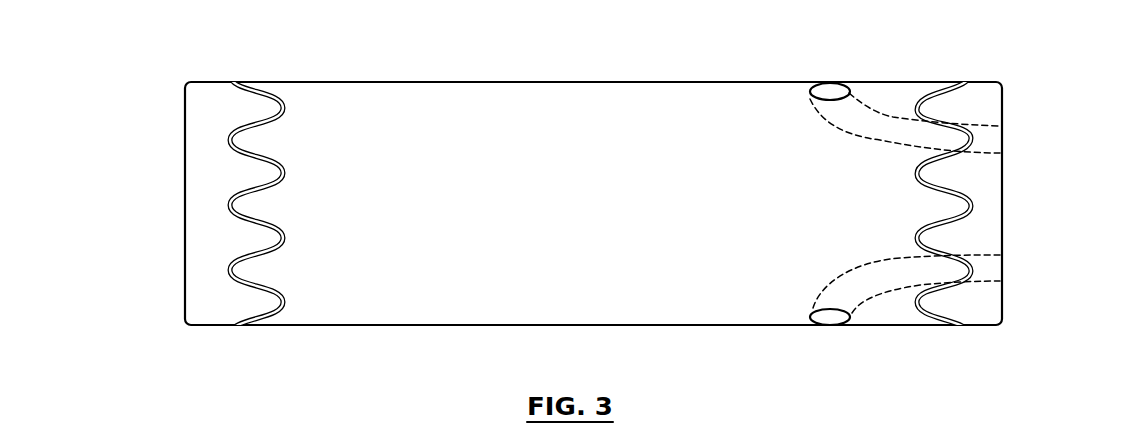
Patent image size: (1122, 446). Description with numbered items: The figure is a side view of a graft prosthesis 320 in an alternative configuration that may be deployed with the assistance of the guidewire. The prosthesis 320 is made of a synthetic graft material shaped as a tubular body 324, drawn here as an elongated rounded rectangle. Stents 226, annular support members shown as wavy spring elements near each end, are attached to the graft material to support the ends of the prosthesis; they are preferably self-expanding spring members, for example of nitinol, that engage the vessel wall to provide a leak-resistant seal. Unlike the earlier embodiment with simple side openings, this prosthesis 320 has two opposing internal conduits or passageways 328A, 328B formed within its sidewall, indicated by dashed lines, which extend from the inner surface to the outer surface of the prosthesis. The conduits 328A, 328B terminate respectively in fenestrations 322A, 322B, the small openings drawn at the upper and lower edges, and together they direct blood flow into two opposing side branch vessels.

The graft prosthesis 320 is at (598, 196).
The tubular body 324 is at (325, 305).
The stents 226 is at (243, 128).
The fenestration 322A is at (830, 92).
The fenestration 322B is at (830, 318).
The internal conduit 328A is at (893, 117).
The internal conduit 328B is at (896, 292).